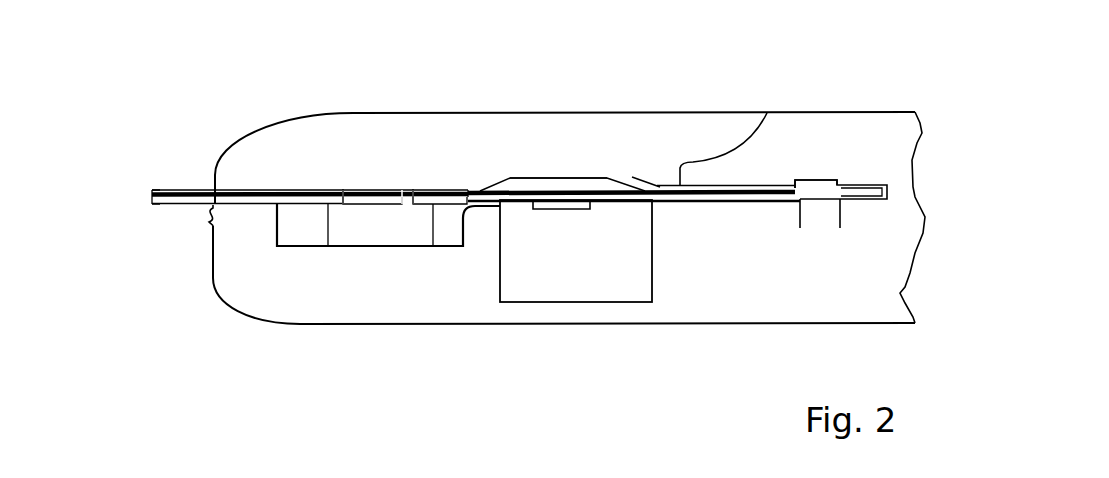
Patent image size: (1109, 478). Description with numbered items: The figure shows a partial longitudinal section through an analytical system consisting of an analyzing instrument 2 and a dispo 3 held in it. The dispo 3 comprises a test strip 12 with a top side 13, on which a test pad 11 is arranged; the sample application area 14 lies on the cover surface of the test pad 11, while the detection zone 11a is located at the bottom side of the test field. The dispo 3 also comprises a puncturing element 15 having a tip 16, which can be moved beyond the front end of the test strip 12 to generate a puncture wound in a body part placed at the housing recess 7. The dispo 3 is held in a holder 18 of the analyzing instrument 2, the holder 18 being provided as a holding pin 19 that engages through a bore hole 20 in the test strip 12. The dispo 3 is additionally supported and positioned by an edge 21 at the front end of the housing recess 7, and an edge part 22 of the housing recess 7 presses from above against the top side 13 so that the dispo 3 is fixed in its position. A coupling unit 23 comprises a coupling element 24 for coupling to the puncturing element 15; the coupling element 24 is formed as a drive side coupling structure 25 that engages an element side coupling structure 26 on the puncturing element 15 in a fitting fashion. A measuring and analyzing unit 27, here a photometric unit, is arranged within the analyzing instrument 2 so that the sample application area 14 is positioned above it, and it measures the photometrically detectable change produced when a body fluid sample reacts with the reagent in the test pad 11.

The analyzing instrument 2 is at (801, 105).
The dispo 3 is at (191, 190).
The housing recess 7 is at (658, 151).
The test pad 11 is at (527, 178).
The detection zone 11a is at (571, 202).
The test strip 12 is at (874, 185).
The top side 13 is at (462, 184).
The sample application area 14 is at (567, 178).
The puncturing element 15 is at (206, 190).
The tip 16 is at (151, 193).
The holder 18 is at (836, 217).
The holding pin 19 is at (815, 217).
The bore hole 20 is at (846, 180).
The edge 21 is at (214, 240).
The edge part 22 is at (708, 172).
The coupling unit 23 is at (334, 235).
The coupling element 24 is at (427, 237).
The drive side coupling structure 25 is at (338, 203).
The element side coupling structure 26 is at (412, 198).
The measuring and analyzing unit 27 is at (618, 282).